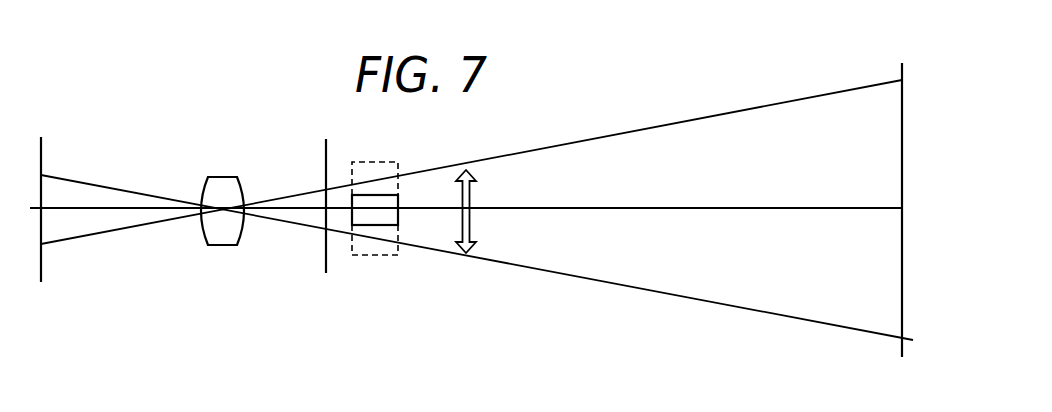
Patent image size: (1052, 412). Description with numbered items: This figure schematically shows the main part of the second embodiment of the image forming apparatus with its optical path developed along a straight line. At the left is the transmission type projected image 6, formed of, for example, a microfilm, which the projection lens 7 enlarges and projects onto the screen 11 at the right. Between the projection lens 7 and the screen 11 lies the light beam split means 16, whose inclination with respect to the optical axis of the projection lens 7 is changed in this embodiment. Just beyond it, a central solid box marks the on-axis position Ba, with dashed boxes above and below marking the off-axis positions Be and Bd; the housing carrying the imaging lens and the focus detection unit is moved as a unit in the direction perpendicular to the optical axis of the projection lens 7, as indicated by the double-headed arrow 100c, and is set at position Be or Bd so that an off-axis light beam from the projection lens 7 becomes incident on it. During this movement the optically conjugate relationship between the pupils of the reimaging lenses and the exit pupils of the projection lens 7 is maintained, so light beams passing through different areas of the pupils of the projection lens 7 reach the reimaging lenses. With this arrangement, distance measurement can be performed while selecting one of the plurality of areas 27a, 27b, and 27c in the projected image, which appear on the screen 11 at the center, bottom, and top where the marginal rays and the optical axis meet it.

The transmission type projected image 6 is at (41, 162).
The projection lens 7 is at (223, 237).
The light beam split means 16 is at (326, 252).
The position Be is at (375, 162).
The position Ba is at (380, 195).
The position Bd is at (367, 255).
The arrow 100c is at (470, 198).
The screen 11 is at (902, 119).
The area 27a is at (900, 209).
The area 27b is at (903, 341).
The area 27c is at (904, 78).